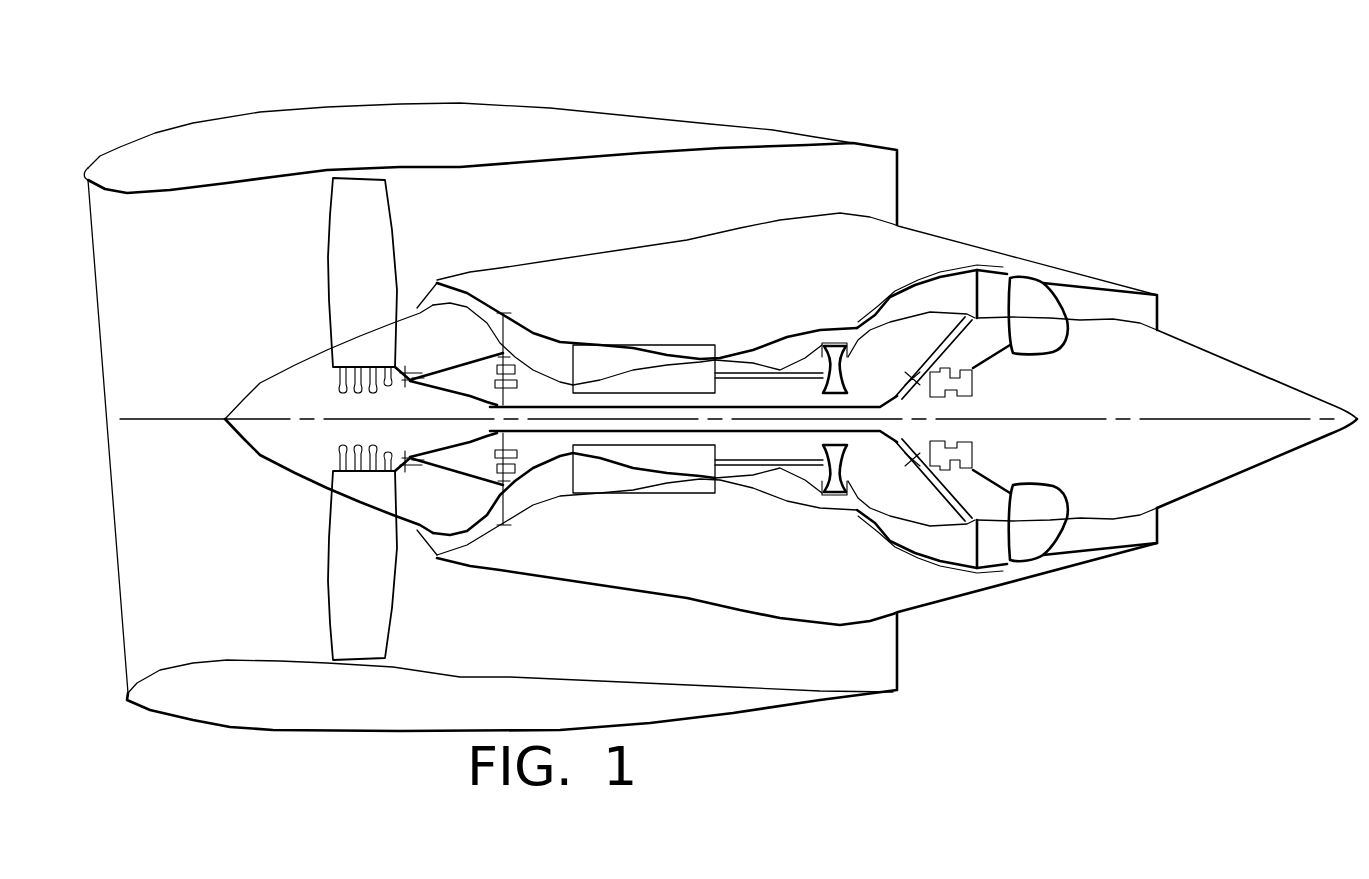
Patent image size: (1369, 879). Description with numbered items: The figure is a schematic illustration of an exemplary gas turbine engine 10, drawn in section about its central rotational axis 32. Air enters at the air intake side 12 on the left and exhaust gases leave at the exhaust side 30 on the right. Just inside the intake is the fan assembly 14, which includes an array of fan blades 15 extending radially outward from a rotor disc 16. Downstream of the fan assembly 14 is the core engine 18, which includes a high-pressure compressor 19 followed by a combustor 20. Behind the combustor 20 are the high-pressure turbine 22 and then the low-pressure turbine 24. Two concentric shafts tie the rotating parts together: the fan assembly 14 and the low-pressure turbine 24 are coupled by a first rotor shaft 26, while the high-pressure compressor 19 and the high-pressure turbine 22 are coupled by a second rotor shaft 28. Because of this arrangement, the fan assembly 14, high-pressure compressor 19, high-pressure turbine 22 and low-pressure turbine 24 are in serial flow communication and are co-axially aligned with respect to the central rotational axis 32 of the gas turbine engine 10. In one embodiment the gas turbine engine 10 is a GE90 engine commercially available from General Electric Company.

The gas turbine engine 10 is at (792, 66).
The air intake side 12 is at (68, 218).
The fan assembly 14 is at (480, 307).
The fan blades 15 is at (355, 253).
The rotor disc 16 is at (310, 460).
The core engine 18 is at (781, 235).
The high-pressure compressor 19 is at (597, 360).
The combustor 20 is at (787, 350).
The high-pressure turbine 22 is at (835, 343).
The low-pressure turbine 24 is at (933, 293).
The first rotor shaft 26 is at (748, 400).
The second rotor shaft 28 is at (795, 497).
The exhaust side 30 is at (948, 168).
The central rotational axis 32 is at (150, 408).